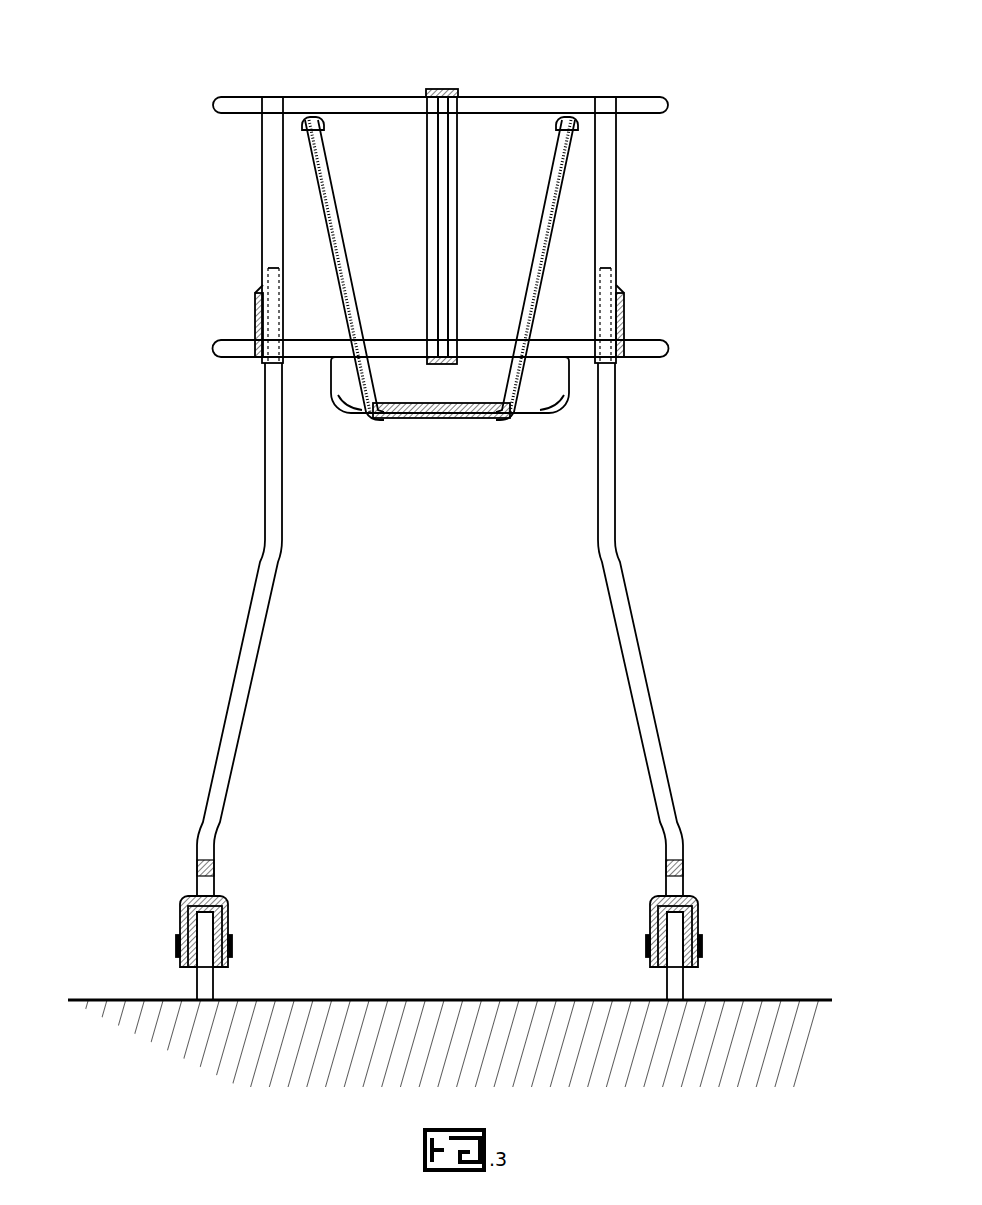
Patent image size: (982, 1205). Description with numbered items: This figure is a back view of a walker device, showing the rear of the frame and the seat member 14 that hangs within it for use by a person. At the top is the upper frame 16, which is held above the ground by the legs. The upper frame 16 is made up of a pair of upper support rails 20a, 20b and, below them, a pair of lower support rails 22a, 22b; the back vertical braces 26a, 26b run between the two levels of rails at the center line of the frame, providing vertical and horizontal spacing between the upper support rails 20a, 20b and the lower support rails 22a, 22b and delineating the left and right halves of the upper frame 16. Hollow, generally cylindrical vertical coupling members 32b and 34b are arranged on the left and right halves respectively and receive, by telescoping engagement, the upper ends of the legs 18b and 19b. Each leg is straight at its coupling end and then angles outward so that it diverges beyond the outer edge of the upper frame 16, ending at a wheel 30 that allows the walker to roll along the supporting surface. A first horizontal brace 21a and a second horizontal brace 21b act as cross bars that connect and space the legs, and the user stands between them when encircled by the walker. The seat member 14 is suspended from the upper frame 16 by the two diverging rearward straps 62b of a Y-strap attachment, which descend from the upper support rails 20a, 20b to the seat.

The seat member 14 is at (428, 436).
The upper frame 16 is at (217, 242).
The leg 18b is at (243, 668).
The leg 19b is at (637, 668).
The upper support rail 20a is at (358, 100).
The upper support rail 20b is at (522, 100).
The first horizontal brace 21a is at (216, 872).
The second horizontal brace 21b is at (664, 872).
The lower support rail 22a is at (250, 352).
The lower support rail 22b is at (648, 352).
The back vertical brace 26a is at (428, 92).
The back vertical brace 26b is at (452, 92).
The wheel 30 is at (206, 991).
The vertical coupling member 32b is at (262, 205).
The vertical coupling member 34b is at (616, 205).
The rearward strap 62b is at (340, 256).